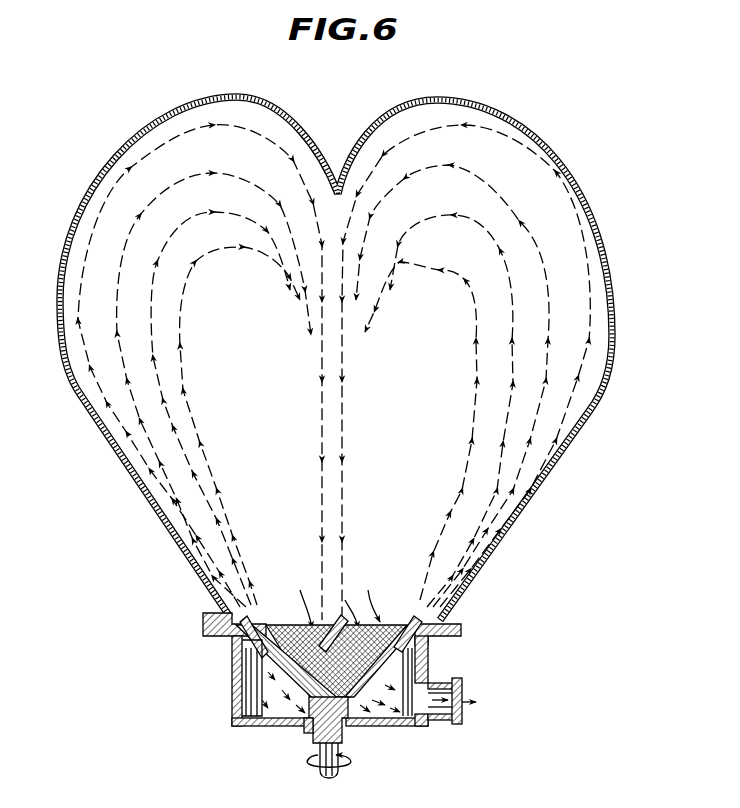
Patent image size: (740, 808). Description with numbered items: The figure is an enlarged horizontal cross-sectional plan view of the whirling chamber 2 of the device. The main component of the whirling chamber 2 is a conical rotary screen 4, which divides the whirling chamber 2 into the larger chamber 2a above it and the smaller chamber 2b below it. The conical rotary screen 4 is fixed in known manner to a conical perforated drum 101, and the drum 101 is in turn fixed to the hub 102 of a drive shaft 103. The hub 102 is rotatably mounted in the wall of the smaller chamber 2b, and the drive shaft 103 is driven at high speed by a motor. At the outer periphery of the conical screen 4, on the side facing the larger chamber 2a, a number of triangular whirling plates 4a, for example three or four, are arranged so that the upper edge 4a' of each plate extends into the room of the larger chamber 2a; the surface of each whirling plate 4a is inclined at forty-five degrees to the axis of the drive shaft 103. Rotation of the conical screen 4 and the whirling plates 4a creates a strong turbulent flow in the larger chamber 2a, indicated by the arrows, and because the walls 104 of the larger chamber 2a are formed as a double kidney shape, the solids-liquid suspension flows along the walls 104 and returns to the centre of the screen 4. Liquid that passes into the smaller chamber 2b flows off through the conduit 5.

The whirling chamber 2 is at (586, 168).
The larger chamber 2a is at (413, 435).
The smaller chamber 2b is at (404, 727).
The conical rotary screen 4 is at (385, 632).
The whirling plate 4a is at (312, 615).
The upper edge 4a' is at (331, 603).
The conduit 5 is at (458, 714).
The conical perforated drum 101 is at (262, 656).
The hub 102 is at (307, 726).
The drive shaft 103 is at (324, 763).
The walls 104 is at (147, 492).